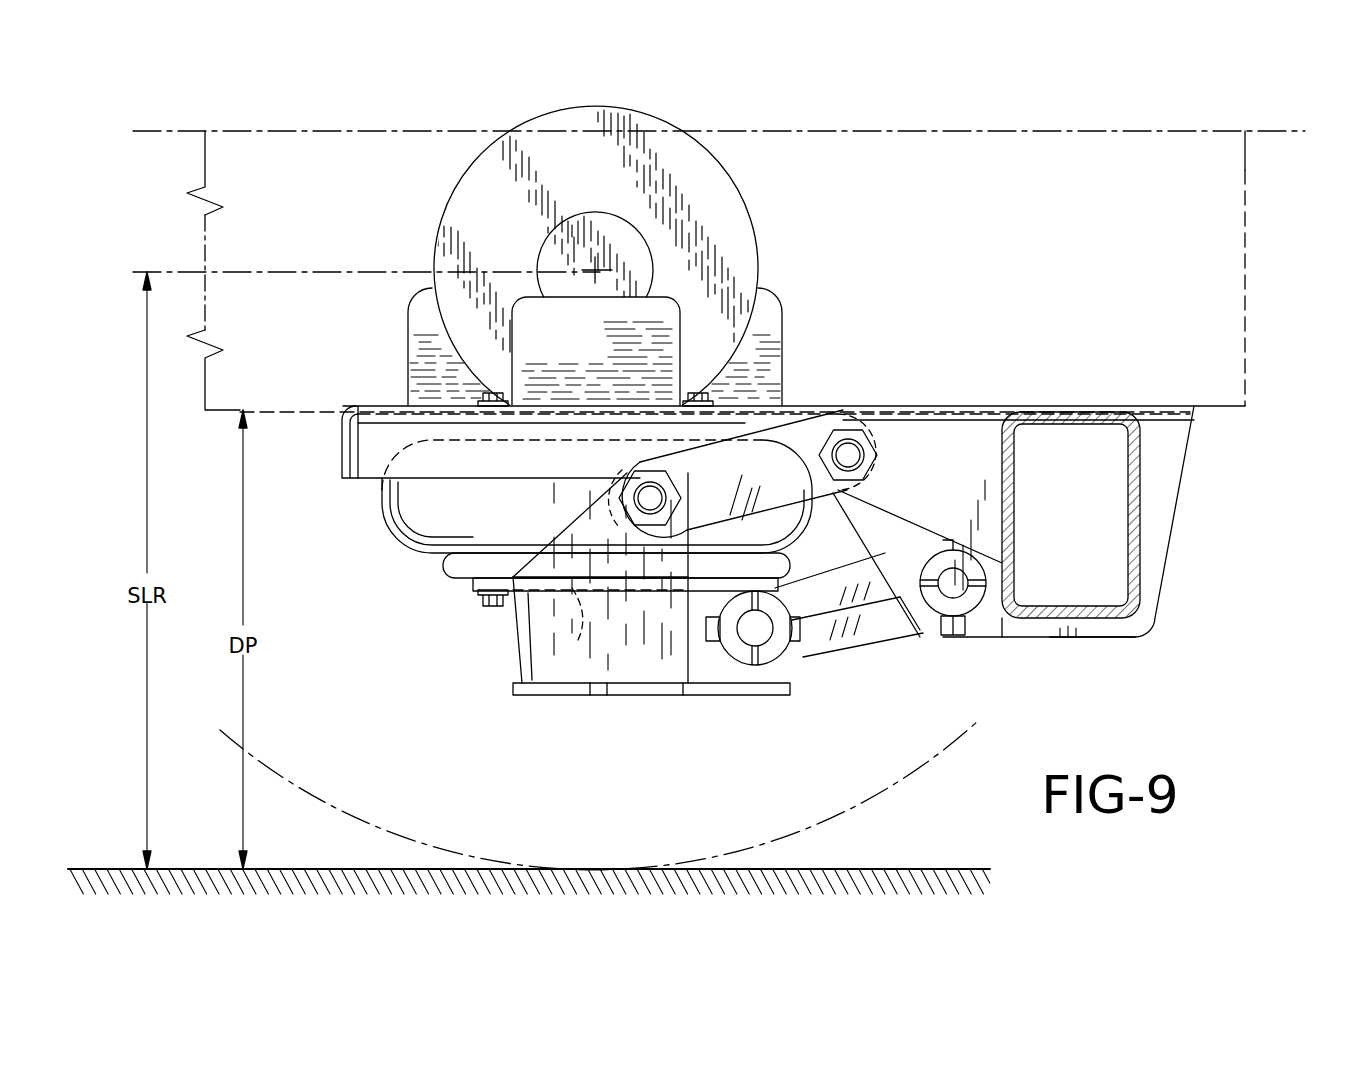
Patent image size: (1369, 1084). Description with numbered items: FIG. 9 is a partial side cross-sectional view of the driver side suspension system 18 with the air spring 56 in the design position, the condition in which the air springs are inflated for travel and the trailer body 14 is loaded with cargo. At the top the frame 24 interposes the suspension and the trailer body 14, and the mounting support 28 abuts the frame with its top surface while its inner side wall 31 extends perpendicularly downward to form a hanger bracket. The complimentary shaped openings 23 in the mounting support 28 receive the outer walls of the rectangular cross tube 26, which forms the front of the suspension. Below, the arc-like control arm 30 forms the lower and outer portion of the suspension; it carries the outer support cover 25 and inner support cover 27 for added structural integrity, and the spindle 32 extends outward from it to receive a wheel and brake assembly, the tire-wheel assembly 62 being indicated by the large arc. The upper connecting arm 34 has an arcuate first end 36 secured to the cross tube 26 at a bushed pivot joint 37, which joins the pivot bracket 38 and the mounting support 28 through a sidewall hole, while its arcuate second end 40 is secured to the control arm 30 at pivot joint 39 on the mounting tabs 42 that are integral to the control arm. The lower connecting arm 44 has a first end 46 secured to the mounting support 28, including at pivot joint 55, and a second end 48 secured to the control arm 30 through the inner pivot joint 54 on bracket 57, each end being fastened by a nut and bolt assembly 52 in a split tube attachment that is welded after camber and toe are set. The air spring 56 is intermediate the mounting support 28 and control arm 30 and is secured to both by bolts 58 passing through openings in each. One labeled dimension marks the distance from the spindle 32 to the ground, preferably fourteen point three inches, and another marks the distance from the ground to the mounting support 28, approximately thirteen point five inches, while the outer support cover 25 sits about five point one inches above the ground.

The trailer body 14 is at (1268, 135).
The driver side suspension system 18 is at (450, 693).
The openings 23 is at (1145, 537).
The frame 24 is at (1245, 270).
The outer support cover 25 is at (420, 309).
The cross tube 26 is at (1030, 638).
The inner support cover 27 is at (527, 338).
The mounting support 28 is at (368, 398).
The control arm 30 is at (445, 195).
The inner side wall 31 is at (373, 465).
The spindle 32 is at (605, 232).
The upper connecting arm 34 is at (808, 405).
The first end 36 is at (885, 438).
The pivot joint 37 is at (878, 470).
The pivot bracket 38 is at (965, 440).
The pivot joint 39 is at (628, 468).
The second end 40 is at (603, 525).
The mounting tabs 42 is at (605, 508).
The lower connecting arm 44 is at (858, 657).
The first end 46 is at (945, 640).
The second end 48 is at (797, 667).
The nut and bolt assembly 52 is at (735, 660).
The inner pivot joint 54 is at (795, 655).
The pivot joint 55 is at (912, 610).
The air spring 56 is at (408, 548).
The bracket 57 is at (700, 665).
The bolts 58 is at (494, 393).
The tire-wheel assembly 62 is at (870, 820).